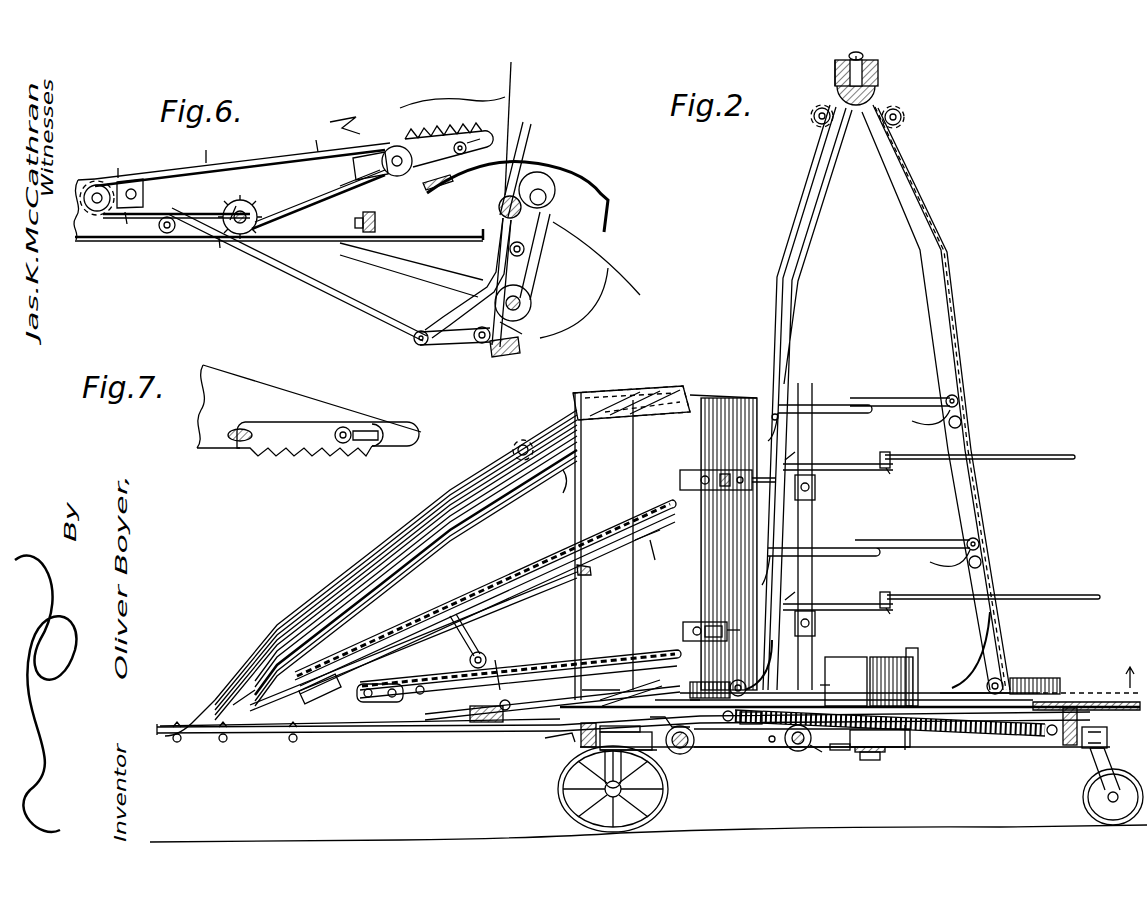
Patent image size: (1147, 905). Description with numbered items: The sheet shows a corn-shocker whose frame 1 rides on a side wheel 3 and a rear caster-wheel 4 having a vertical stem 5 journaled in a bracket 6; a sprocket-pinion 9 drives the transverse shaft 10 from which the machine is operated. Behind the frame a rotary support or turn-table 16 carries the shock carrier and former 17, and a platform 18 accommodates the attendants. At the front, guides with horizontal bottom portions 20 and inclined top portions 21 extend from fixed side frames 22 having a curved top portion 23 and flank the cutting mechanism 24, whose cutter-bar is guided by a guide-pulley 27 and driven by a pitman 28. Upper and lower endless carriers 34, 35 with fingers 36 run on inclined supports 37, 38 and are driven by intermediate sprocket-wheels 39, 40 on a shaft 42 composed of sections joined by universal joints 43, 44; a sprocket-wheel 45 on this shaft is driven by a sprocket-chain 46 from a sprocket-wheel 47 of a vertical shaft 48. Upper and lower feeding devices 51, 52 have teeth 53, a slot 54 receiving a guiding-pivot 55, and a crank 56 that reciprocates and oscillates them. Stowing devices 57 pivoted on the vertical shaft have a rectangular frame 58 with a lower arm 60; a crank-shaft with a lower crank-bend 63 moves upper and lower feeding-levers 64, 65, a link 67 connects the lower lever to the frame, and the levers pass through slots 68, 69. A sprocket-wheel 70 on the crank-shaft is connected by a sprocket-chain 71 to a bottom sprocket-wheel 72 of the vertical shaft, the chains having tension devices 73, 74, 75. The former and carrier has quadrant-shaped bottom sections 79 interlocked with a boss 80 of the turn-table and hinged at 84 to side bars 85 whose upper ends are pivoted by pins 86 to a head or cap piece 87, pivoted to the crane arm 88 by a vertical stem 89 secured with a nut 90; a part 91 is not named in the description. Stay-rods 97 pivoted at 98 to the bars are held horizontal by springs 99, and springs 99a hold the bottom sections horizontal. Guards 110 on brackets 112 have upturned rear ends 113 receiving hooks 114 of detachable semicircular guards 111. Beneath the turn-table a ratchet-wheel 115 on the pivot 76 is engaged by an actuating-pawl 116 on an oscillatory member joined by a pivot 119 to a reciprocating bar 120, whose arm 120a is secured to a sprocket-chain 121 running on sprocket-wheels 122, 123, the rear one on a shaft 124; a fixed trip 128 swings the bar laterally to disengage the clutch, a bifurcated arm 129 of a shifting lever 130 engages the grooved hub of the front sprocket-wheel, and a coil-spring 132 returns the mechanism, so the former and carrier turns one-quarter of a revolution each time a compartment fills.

In FIG. 2, the frame 1 is at (925, 748).
In FIG. 2, the side wheel 3 is at (666, 800).
In FIG. 2, the caster-wheel 4 is at (1083, 798).
In FIG. 2, the vertical stem 5 is at (1107, 738).
In FIG. 2, the bracket 6 is at (1090, 760).
In FIG. 2, the sprocket-pinion 9 is at (900, 700).
In FIG. 2, the transverse shaft 10 is at (688, 752).
In FIG. 2, the rotary support or turn-table 16 is at (1062, 700).
In FIG. 2, the shock carrier and former 17 is at (847, 165).
In FIG. 2, the platform 18 is at (1116, 683).
In FIG. 2, the bottom portions of guides 20 is at (345, 734).
In FIG. 2, the inclined top portions of guides 21 is at (393, 538).
In FIG. 6, the side frames 22 is at (377, 223).
In FIG. 2, the side frames 22 is at (814, 540).
In FIG. 2, the connecting top portion 23 is at (600, 392).
In FIG. 6, the cutting mechanism 24 is at (330, 124).
In FIG. 2, the cutting mechanism 24 is at (545, 737).
In FIG. 2, the guide-pulley 27 is at (601, 694).
In FIG. 2, the pitman 28 is at (580, 740).
In FIG. 2, the upper endless carrier 34 is at (520, 568).
In FIG. 6, the lower endless carrier 35 is at (346, 185).
In FIG. 2, the lower endless carrier 35 is at (535, 668).
In FIG. 6, the fingers or projections 36 is at (212, 160).
In FIG. 2, the fingers or projections 36 is at (395, 684).
In FIG. 2, the inclined support 37 is at (385, 668).
In FIG. 6, the inclined support 38 is at (318, 199).
In FIG. 2, the inclined support 38 is at (400, 734).
In FIG. 2, the intermediate sprocket-wheel 39 is at (465, 598).
In FIG. 6, the intermediate sprocket-wheel 40 is at (230, 207).
In FIG. 2, the intermediate sprocket-wheel 40 is at (497, 660).
In FIG. 6, the shaft 42 is at (243, 200).
In FIG. 2, the shaft 42 is at (468, 630).
In FIG. 2, the universal joint 43 is at (470, 665).
In FIG. 2, the universal joint 44 is at (508, 703).
In FIG. 2, the sprocket-wheel 45 is at (470, 712).
In FIG. 6, the sprocket-chain 46 is at (345, 276).
In FIG. 2, the sprocket-chain 46 is at (520, 704).
In FIG. 2, the sprocket-wheel 47 is at (708, 685).
In FIG. 6, the vertical shaft 48 is at (530, 326).
In FIG. 2, the upper feeding device 51 is at (660, 553).
In FIG. 6, the lower feeding device 52 is at (462, 124).
In FIG. 2, the lower feeding device 52 is at (625, 670).
In FIG. 6, the teeth 53 is at (445, 125).
In FIG. 7, the teeth 53 is at (314, 452).
In FIG. 6, the slot 54 is at (490, 133).
In FIG. 7, the slot 54 is at (364, 434).
In FIG. 6, the guiding-pivot or fastening device 55 is at (466, 141).
In FIG. 7, the guiding-pivot or fastening device 55 is at (345, 427).
In FIG. 2, the guiding-pivot or fastening device 55 is at (662, 534).
In FIG. 6, the crank 56 is at (400, 150).
In FIG. 7, the crank 56 is at (240, 442).
In FIG. 2, the crank 56 is at (586, 576).
In FIG. 6, the packing or stowing device 57 is at (437, 191).
In FIG. 6, the rectangular frame or piece 58 is at (506, 358).
In FIG. 6, the lower arm 60 is at (531, 286).
In FIG. 6, the lower crank-bend 63 is at (548, 203).
In FIG. 2, the upper feeding-lever 64 is at (698, 470).
In FIG. 6, the lower feeding-lever 65 is at (472, 292).
In FIG. 2, the lower feeding-lever 65 is at (682, 630).
In FIG. 6, the link 67 is at (456, 343).
In FIG. 2, the upper slot 68 is at (712, 490).
In FIG. 6, the lower slot 69 is at (486, 169).
In FIG. 2, the lower slot 69 is at (722, 622).
In FIG. 6, the sprocket-wheel 70 is at (547, 180).
In FIG. 6, the sprocket-chain 71 is at (546, 250).
In FIG. 6, the bottom sprocket-wheel 72 is at (522, 305).
In FIG. 2, the tension device 73 is at (415, 630).
In FIG. 6, the tension device 74 is at (165, 234).
In FIG. 2, the tension device 74 is at (418, 678).
In FIG. 6, the tension device 75 is at (509, 249).
In FIG. 2, the pivot 76 is at (866, 762).
In FIG. 2, the bottom sections 79 is at (918, 684).
In FIG. 2, the rectangular boss or enlargement 80 is at (860, 667).
In FIG. 2, the hinge 84 is at (1022, 666).
In FIG. 2, the side bars 85 is at (785, 242).
In FIG. 2, the pins or rivets 86 is at (813, 120).
In FIG. 2, the head or cap piece 87 is at (876, 95).
In FIG. 2, the arm of the crane 88 is at (879, 78).
In FIG. 2, the vertical stem 89 is at (864, 56).
In FIG. 2, the nut 90 is at (834, 64).
In FIG. 2, the bar 91 is at (918, 660).
In FIG. 2, the stay-rods 97 is at (900, 396).
In FIG. 2, the pivots 98 is at (768, 394).
In FIG. 2, the springs 99 is at (802, 392).
In FIG. 2, the springs 99a is at (762, 680).
In FIG. 2, the guards 110 is at (838, 472).
In FIG. 2, the guards 111 is at (1008, 462).
In FIG. 2, the brackets 112 is at (808, 462).
In FIG. 2, the upturned rear ends 113 is at (888, 455).
In FIG. 2, the open eyes or hooks 114 is at (891, 470).
In FIG. 2, the ratchet-wheel 115 is at (890, 750).
In FIG. 2, the actuating-pawl 116 is at (839, 740).
In FIG. 2, the pivot 119 is at (906, 752).
In FIG. 2, the bar 120 is at (822, 697).
In FIG. 2, the arm 120a is at (761, 739).
In FIG. 2, the sprocket-chain 121 is at (760, 755).
In FIG. 2, the front sprocket-wheel 122 is at (631, 762).
In FIG. 2, the rear sprocket-wheel 123 is at (815, 750).
In FIG. 2, the shaft 124 is at (800, 752).
In FIG. 2, the fixed trip 128 is at (802, 738).
In FIG. 2, the fork or bifurcated arm 129 is at (626, 742).
In FIG. 2, the shifting lever 130 is at (620, 726).
In FIG. 2, the coil-spring 132 is at (1020, 737).